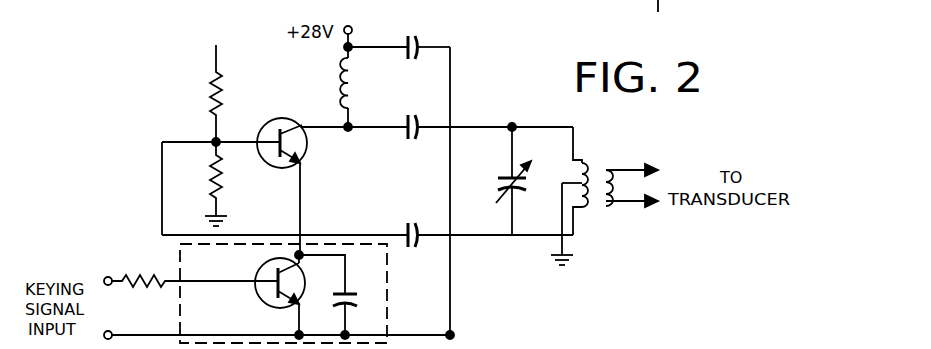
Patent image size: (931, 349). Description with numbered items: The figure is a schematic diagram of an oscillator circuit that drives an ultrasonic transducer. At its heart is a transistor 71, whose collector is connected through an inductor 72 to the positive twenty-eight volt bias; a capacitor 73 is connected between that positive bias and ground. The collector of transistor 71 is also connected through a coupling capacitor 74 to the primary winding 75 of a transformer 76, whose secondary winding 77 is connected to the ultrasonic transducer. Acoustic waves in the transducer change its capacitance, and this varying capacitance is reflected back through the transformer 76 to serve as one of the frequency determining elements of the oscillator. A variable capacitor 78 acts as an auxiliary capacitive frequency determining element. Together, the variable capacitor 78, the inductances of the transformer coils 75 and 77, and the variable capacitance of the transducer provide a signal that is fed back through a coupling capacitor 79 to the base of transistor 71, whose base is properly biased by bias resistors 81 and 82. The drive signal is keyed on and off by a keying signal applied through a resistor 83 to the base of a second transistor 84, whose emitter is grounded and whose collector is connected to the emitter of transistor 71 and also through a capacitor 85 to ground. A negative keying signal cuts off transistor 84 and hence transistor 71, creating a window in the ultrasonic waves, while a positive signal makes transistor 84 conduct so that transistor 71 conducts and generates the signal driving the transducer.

The transistor 71 is at (275, 122).
The inductor 72 is at (357, 90).
The capacitor 73 is at (425, 40).
The coupling capacitor 74 is at (405, 139).
The primary winding 75 is at (577, 190).
The transformer 76 is at (609, 165).
The secondary winding 77 is at (618, 196).
The variable capacitor 78 is at (503, 178).
The coupling capacitor 79 is at (403, 228).
The bias resistor 81 is at (214, 77).
The bias resistor 82 is at (222, 181).
The resistor 83 is at (133, 278).
The transistor 84 is at (269, 298).
The capacitor 85 is at (355, 288).